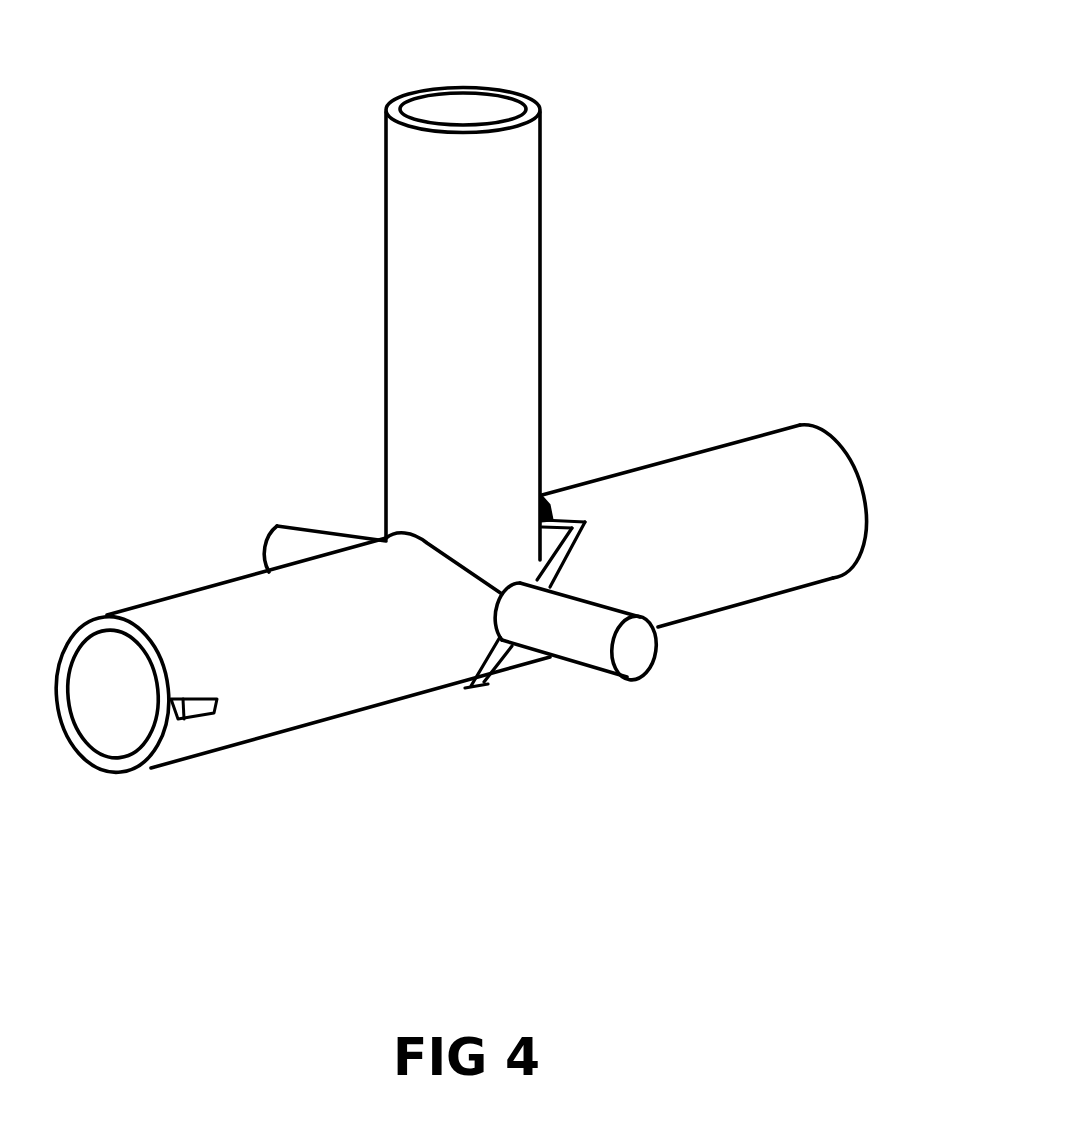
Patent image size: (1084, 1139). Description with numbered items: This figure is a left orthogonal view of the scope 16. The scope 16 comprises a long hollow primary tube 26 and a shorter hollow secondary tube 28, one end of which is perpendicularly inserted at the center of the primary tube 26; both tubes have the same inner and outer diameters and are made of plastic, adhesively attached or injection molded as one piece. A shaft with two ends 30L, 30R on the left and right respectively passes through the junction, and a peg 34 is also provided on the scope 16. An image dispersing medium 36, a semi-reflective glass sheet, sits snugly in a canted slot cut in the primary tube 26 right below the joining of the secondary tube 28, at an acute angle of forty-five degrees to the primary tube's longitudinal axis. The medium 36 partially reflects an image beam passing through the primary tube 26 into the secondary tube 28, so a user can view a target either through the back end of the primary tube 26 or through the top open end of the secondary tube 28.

The scope 16 is at (262, 168).
The secondary tube 28 is at (492, 203).
The primary tube 26 is at (792, 557).
The right end of shaft 30R is at (277, 527).
The left end of shaft 30L is at (640, 655).
The image dispersing medium 36 is at (547, 518).
The peg 34 is at (195, 713).